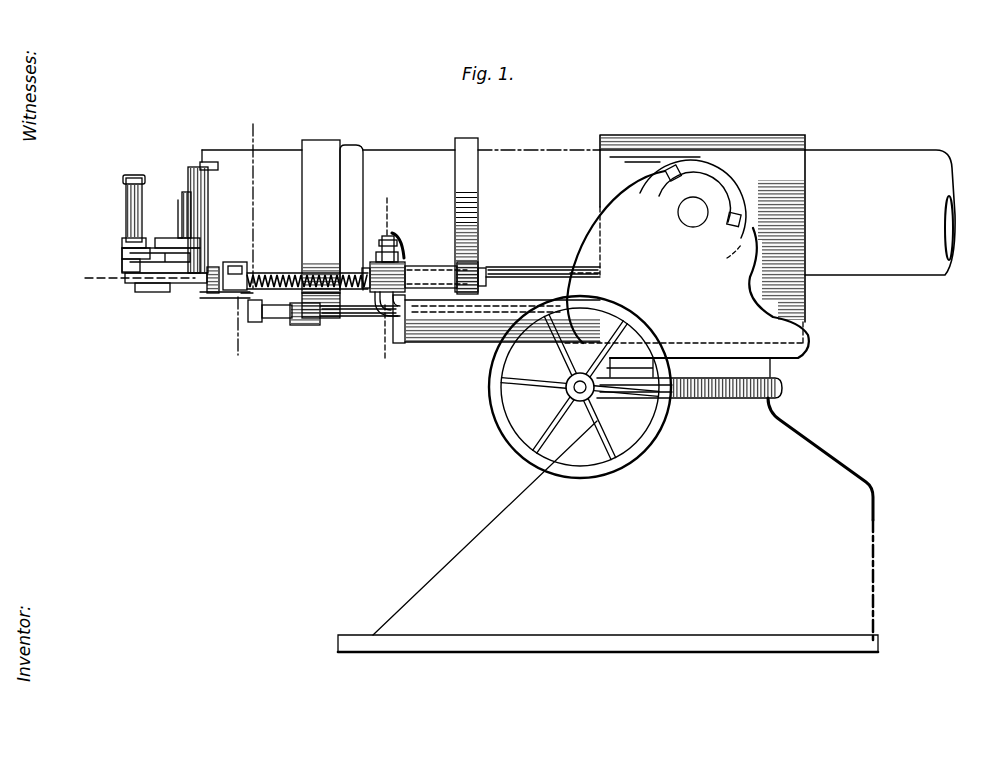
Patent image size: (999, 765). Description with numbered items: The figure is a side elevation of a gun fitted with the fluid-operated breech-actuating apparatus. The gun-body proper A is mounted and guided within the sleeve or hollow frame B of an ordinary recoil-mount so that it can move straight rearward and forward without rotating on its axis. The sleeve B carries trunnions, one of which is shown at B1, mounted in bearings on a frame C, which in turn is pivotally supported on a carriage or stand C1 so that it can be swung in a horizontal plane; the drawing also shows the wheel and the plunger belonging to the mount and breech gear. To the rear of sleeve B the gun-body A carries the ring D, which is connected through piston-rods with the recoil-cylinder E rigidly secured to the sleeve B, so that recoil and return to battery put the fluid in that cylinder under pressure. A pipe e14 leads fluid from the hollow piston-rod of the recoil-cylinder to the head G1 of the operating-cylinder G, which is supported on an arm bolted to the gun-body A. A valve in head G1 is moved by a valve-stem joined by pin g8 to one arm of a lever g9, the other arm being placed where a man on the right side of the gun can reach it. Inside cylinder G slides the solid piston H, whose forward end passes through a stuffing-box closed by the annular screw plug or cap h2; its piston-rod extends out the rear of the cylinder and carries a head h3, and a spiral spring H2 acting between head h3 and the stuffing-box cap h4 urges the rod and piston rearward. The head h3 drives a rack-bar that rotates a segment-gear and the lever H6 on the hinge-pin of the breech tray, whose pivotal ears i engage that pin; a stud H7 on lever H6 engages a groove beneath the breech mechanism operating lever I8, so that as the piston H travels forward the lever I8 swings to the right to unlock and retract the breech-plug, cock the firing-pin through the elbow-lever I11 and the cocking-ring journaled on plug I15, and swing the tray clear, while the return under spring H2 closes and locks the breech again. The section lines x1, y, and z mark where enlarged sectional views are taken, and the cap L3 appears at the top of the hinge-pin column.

The gun-body proper A is at (578, 212).
The sleeve or hollow frame B is at (685, 239).
The trunnion B1 is at (694, 224).
The frame C is at (688, 268).
The carriage or stand C1 is at (608, 515).
The ring D is at (390, 228).
The recoil-cylinder E is at (477, 325).
The operating-cylinder G is at (428, 282).
The head of operating-cylinder G1 is at (384, 322).
The pin g8 is at (386, 244).
The lever g9 is at (398, 240).
The annular screw plug or cap h2 is at (481, 268).
The head h3 is at (229, 264).
The cap or plug of stuffing-box h4 is at (365, 268).
The solid piston H is at (232, 292).
The spiral spring H2 is at (273, 272).
The lever H6 is at (158, 284).
The stud H7 is at (124, 266).
The breech mechanism operating lever I8 is at (124, 251).
The elbow-lever I11 is at (170, 240).
The plug I15 is at (180, 199).
The pivotal lugs or ears i is at (209, 192).
The cap L3 is at (205, 162).
The pipe e14 is at (300, 321).
The section line x'x' x1 is at (382, 277).
The section line yy y is at (243, 241).
The section line zz z is at (133, 279).
The elevating hand wheel is at (580, 387).
The plunger handle plunger is at (134, 211).